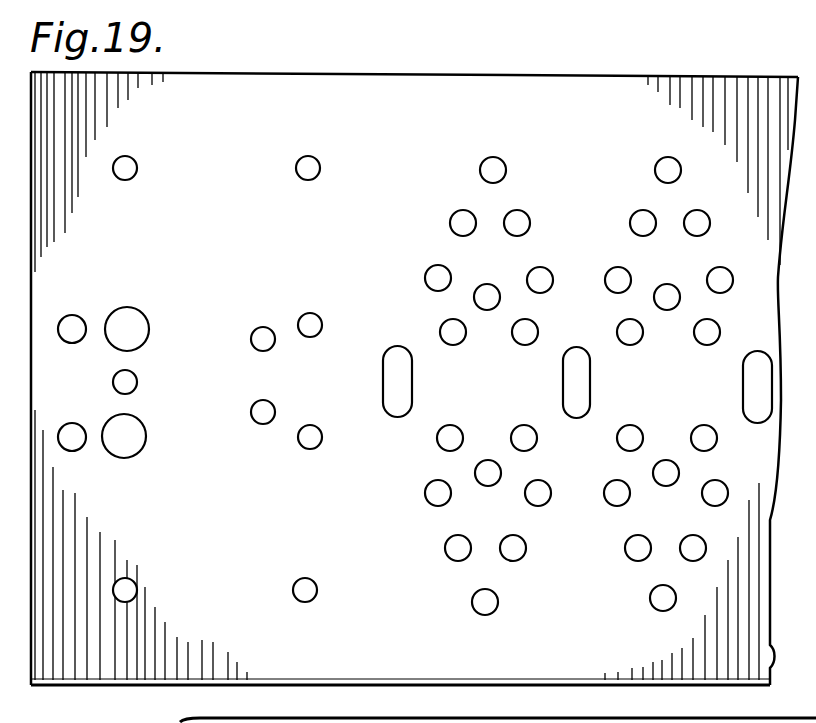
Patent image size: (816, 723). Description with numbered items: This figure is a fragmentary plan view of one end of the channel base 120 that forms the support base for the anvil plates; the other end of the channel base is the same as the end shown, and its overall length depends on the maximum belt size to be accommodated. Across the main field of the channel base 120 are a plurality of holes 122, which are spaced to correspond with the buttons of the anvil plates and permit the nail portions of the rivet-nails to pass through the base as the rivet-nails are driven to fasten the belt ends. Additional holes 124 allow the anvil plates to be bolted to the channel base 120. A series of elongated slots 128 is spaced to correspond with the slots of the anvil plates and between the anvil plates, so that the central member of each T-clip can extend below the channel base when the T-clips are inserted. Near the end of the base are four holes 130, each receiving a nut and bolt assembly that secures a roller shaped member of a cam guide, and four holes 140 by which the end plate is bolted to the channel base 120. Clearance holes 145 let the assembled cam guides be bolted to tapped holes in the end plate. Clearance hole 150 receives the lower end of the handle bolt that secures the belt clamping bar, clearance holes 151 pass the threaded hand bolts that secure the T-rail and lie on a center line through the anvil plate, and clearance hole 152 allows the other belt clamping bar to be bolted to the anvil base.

The channel base 120 is at (92, 698).
The holes 122 is at (449, 229).
The additional holes 124 is at (654, 167).
The slots 128 is at (568, 390).
The holes 130 is at (249, 344).
The holes 140 is at (296, 168).
The clearance holes 145 is at (67, 343).
The clearance hole 150 is at (157, 304).
The clearance holes 151 is at (147, 362).
The clearance hole 152 is at (146, 434).